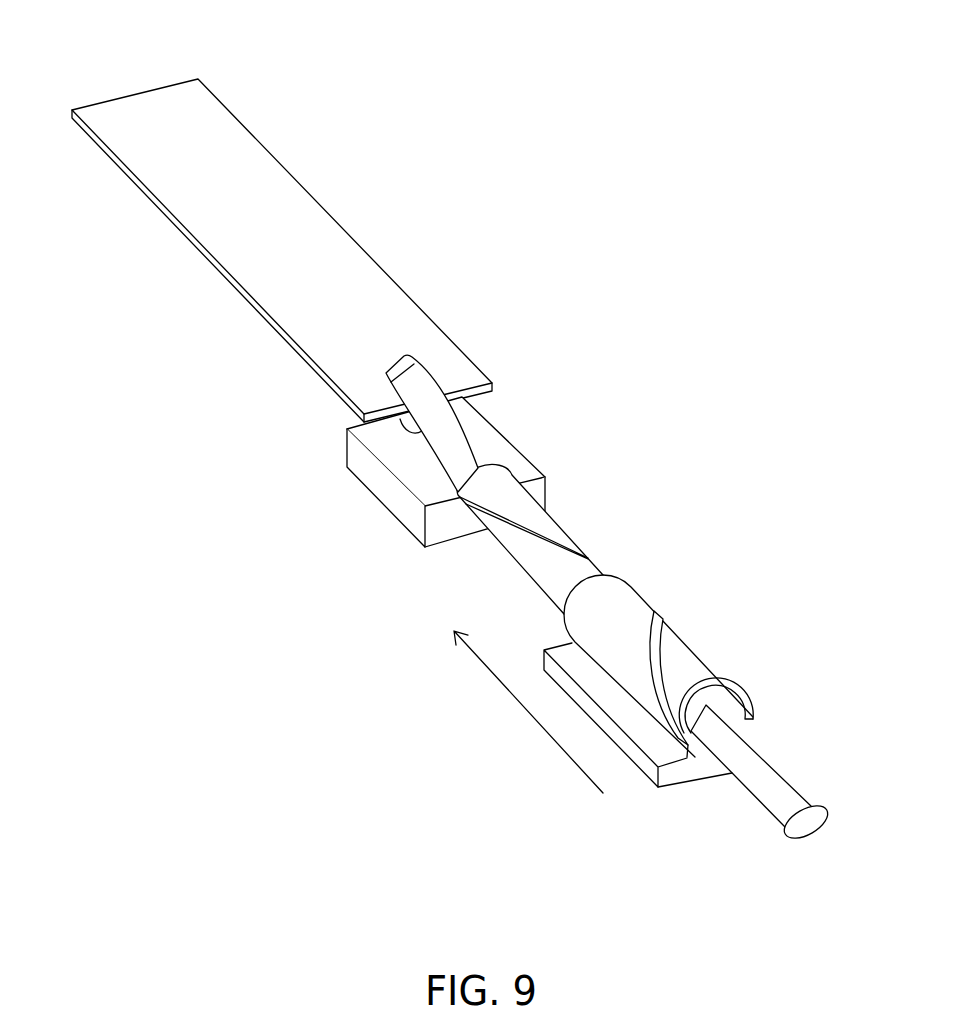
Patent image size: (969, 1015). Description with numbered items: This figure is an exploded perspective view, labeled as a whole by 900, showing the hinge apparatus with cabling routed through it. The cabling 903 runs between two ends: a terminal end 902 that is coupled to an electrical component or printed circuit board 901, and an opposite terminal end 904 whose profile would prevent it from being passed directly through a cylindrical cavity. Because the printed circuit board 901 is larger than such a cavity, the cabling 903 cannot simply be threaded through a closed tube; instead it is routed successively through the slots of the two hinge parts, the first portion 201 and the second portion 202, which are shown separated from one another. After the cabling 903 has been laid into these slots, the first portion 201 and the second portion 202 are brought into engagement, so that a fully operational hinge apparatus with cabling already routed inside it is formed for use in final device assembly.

The actuator assembly 900 is at (701, 44).
The printed circuit board 901 is at (200, 80).
The terminal end 902 is at (406, 360).
The cabling 903 is at (468, 450).
The terminal end 904 is at (790, 836).
The first portion 201 is at (582, 474).
The second portion 202 is at (731, 632).